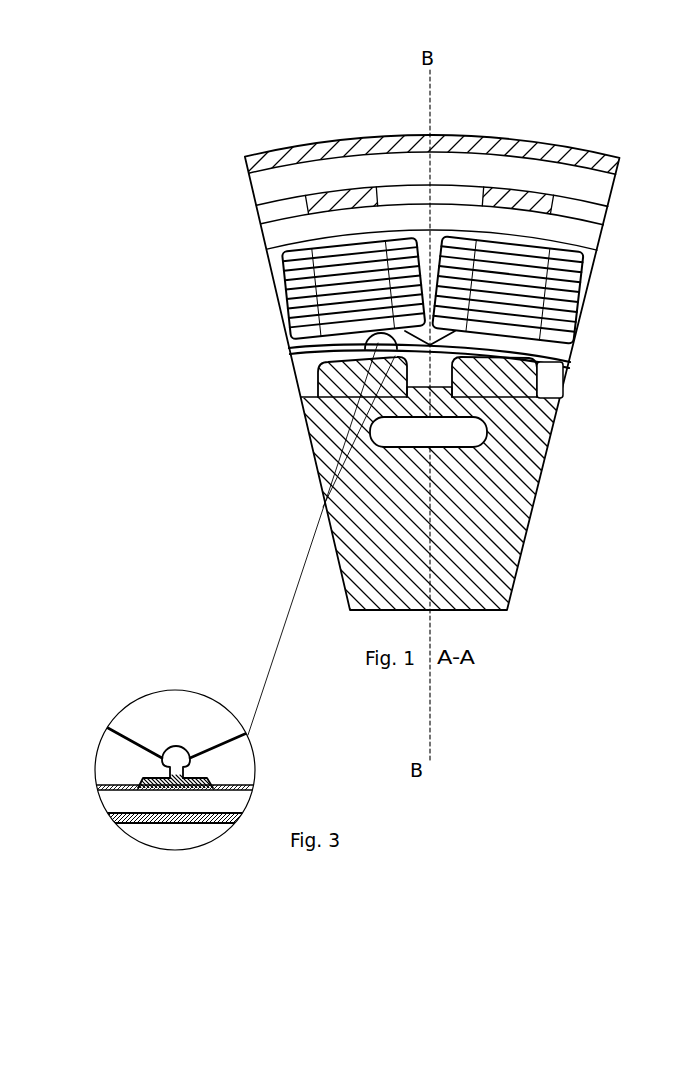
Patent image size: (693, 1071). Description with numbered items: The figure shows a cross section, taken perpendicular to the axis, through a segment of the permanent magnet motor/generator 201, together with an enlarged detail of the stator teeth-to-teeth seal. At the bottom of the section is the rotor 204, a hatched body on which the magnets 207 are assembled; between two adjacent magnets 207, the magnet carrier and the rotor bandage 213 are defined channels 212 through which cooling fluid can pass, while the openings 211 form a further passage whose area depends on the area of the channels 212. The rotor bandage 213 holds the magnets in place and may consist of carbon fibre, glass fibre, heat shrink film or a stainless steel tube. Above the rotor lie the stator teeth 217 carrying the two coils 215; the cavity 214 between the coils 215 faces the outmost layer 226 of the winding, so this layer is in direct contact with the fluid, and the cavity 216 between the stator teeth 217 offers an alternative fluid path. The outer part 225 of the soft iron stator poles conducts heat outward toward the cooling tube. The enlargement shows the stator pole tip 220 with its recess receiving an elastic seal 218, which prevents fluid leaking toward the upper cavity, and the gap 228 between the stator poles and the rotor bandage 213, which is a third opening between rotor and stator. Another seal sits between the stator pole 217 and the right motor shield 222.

In FIG. 1, the permanent magnet motor/generator 201 is at (462, 353).
In FIG. 1, the rotor 204 is at (353, 477).
In FIG. 1, the magnets 207 is at (343, 385).
In FIG. 1, the openings 211 is at (387, 426).
In FIG. 1, the channels 212 is at (513, 428).
In FIG. 3, the rotor bandage 213 is at (247, 813).
In FIG. 1, the cavity 214 is at (428, 220).
In FIG. 1, the coils 215 is at (575, 250).
In FIG. 3, the cavity 216 is at (215, 710).
In FIG. 1, the stator teeth 217 is at (282, 343).
In FIG. 3, the elastic seals 218 is at (182, 745).
In FIG. 3, the stator pole tip 220 is at (207, 764).
In FIG. 1, the right motor shield 222 is at (465, 228).
In FIG. 1, the outer part of the stator poles 225 is at (296, 235).
In FIG. 1, the outmost layer 226 is at (380, 230).
In FIG. 3, the gap 228 is at (125, 797).